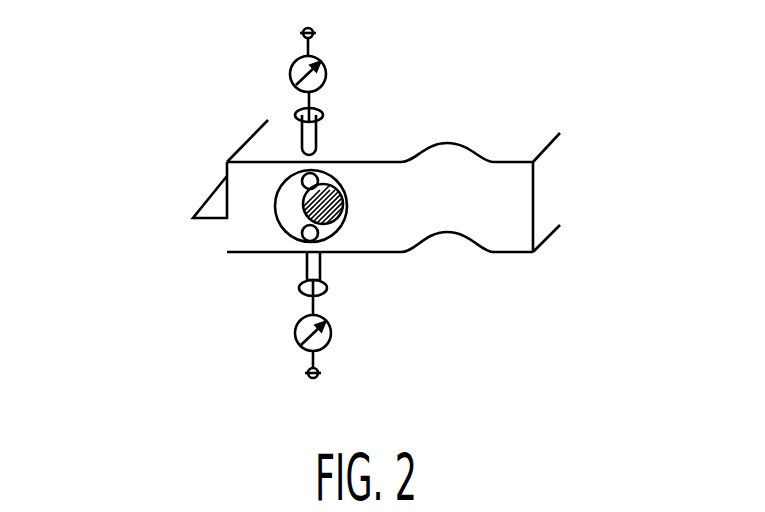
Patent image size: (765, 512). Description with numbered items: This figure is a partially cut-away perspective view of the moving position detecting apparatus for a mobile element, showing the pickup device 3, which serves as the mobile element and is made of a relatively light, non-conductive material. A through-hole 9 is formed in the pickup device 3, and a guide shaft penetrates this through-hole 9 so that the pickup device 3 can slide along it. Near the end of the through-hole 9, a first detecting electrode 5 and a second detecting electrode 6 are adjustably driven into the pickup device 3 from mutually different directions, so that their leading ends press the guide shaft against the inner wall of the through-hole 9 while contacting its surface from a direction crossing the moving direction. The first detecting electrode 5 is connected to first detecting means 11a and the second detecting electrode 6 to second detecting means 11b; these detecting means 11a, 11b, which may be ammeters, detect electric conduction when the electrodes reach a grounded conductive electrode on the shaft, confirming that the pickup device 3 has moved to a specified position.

The pickup device 3 is at (448, 202).
The first detecting electrode 5 is at (317, 137).
The second detecting electrode 6 is at (307, 264).
The through-hole 9 is at (285, 198).
The first detecting means 11a is at (291, 68).
The second detecting means 11b is at (331, 335).